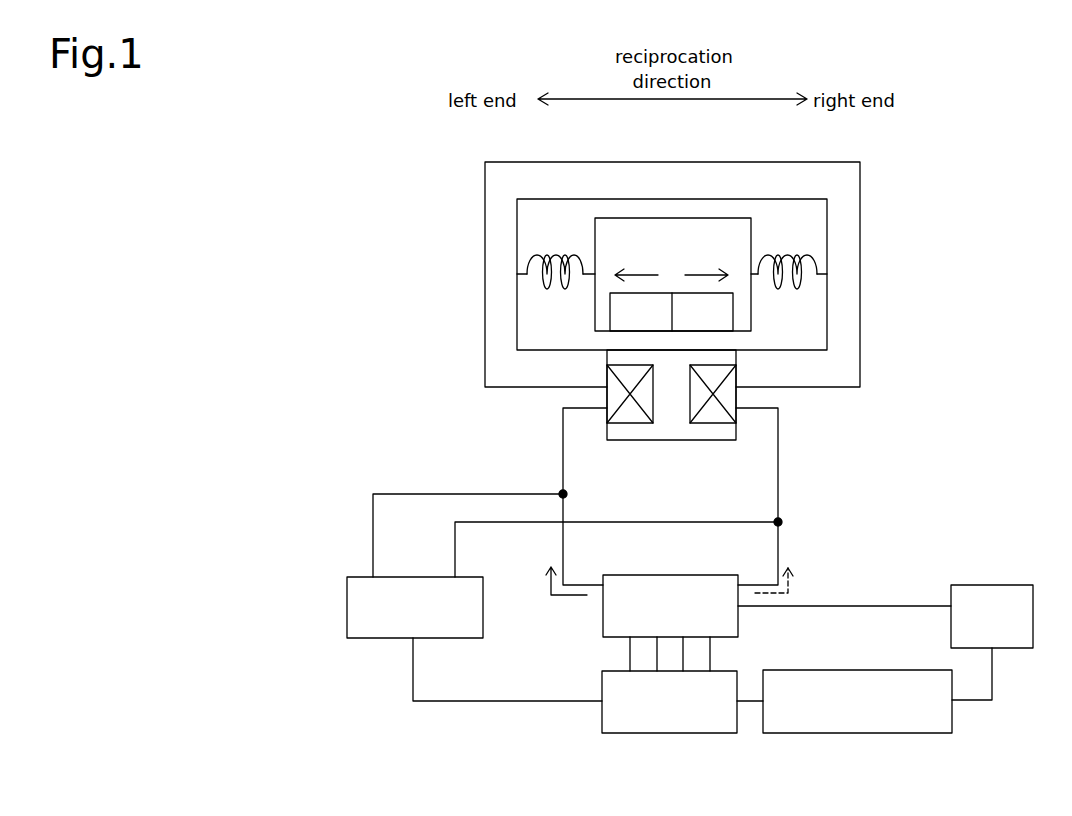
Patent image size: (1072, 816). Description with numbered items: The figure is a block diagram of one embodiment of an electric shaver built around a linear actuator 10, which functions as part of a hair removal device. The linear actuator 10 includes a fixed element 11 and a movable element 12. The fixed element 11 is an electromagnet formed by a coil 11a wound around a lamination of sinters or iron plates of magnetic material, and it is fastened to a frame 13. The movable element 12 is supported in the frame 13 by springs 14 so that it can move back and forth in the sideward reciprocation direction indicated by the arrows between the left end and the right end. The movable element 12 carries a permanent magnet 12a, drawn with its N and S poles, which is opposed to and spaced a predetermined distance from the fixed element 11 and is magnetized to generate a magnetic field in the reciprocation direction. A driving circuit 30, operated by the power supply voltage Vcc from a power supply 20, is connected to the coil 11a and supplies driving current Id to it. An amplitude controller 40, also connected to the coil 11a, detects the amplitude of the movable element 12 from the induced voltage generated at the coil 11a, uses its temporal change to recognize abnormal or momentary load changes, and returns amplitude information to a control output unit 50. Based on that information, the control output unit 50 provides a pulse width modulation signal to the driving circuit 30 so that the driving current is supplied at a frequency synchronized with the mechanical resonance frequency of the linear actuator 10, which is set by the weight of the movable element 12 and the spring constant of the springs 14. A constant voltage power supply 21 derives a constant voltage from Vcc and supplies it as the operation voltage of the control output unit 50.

The linear actuator 10 is at (912, 163).
The fixed element 11 is at (712, 433).
The coil 11a is at (630, 424).
The movable element 12 is at (595, 318).
The permanent magnet 12a is at (733, 316).
The frame 13 is at (510, 162).
The springs 14 is at (553, 254).
The power supply 20 is at (990, 585).
The constant voltage power supply 21 is at (855, 733).
The driving circuit 30 is at (670, 575).
The amplitude controller 40 is at (358, 640).
The control output unit 50 is at (670, 733).